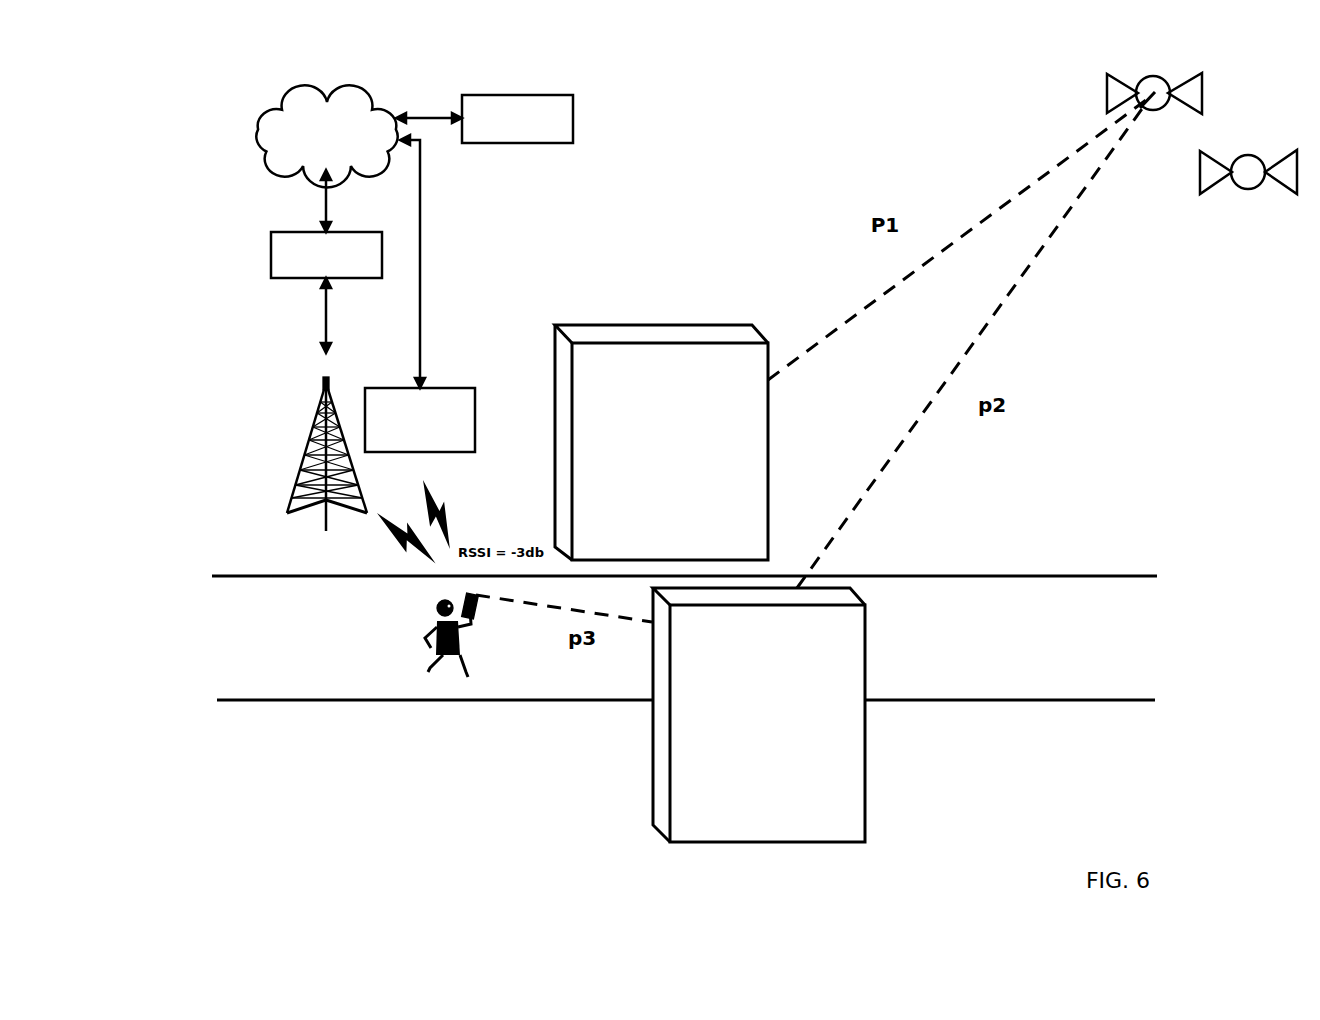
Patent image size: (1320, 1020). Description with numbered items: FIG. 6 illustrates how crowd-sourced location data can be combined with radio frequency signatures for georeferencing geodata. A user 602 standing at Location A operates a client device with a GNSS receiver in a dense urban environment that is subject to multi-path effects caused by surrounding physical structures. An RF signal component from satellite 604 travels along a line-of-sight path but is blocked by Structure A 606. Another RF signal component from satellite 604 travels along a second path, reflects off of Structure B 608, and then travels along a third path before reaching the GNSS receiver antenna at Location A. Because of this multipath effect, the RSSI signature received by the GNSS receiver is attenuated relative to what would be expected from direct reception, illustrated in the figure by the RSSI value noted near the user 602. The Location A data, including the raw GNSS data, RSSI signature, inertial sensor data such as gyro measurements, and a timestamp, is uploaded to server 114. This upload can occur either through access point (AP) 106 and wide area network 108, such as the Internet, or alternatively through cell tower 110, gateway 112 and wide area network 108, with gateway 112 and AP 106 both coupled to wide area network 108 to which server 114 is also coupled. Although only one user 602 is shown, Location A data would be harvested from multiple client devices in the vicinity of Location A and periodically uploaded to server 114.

The access point (AP) 106 is at (470, 388).
The wide area network 108 is at (283, 104).
The cell tower 110 is at (323, 384).
The gateway 112 is at (272, 232).
The server 114 is at (573, 118).
The user 602 is at (437, 603).
The satellite 604 is at (1107, 76).
The Structure A 606 is at (558, 325).
The Structure B 608 is at (669, 843).